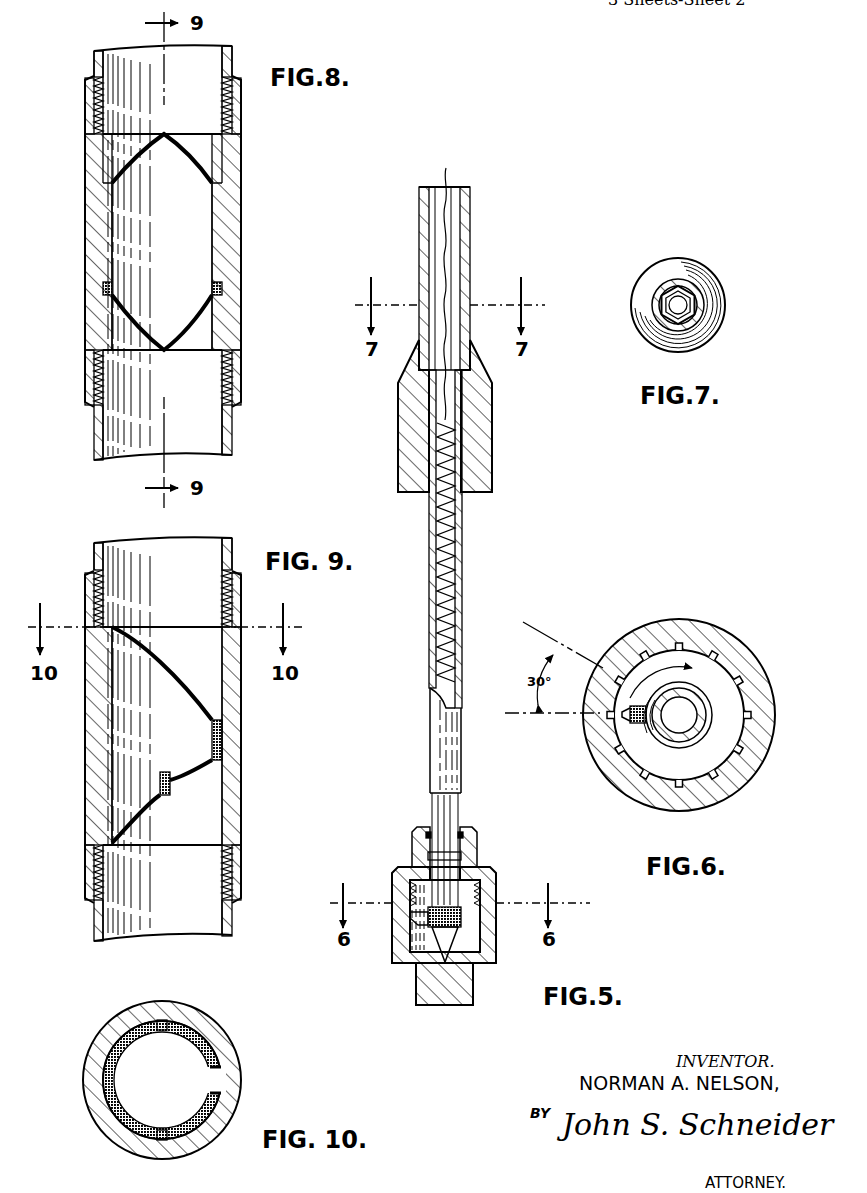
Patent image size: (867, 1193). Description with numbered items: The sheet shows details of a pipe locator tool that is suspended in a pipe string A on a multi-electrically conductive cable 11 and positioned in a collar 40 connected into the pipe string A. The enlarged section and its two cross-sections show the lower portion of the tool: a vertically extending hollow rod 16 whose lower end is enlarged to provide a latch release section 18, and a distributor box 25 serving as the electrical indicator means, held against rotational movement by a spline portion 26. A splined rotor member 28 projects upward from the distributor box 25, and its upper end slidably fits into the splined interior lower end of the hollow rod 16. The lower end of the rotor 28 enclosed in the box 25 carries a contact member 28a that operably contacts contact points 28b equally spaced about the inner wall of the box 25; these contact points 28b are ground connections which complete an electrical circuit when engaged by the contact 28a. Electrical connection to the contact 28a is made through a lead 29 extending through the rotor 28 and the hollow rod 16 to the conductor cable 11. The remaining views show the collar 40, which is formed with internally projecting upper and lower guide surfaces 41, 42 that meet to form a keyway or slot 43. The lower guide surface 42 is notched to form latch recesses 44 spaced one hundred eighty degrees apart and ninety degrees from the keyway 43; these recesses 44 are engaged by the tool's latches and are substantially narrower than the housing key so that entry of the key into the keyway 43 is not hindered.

In FIG. 8, the pipe string A is at (100, 431).
In FIG. 9, the pipe string A is at (97, 553).
In FIG. 8, the collar 40 is at (100, 215).
In FIG. 9, the collar 40 is at (102, 750).
In FIG. 10, the collar 40 is at (100, 1057).
In FIG. 8, the upper guide surface 41 is at (197, 158).
In FIG. 9, the upper guide surface 41 is at (175, 680).
In FIG. 10, the upper guide surface 41 is at (138, 1027).
In FIG. 8, the lower guide surface 42 is at (197, 335).
In FIG. 9, the lower guide surface 42 is at (200, 770).
In FIG. 9, the keyway 43 is at (222, 738).
In FIG. 10, the keyway 43 is at (215, 1080).
In FIG. 8, the latch recesses 44 is at (103, 288).
In FIG. 9, the latch recesses 44 is at (162, 780).
In FIG. 10, the latch recesses 44 is at (178, 1022).
In FIG. 5, the multi-electrically conductive cable 11 is at (448, 213).
In FIG. 5, the hollow rod 16 is at (466, 254).
In FIG. 7, the hollow rod 16 is at (673, 282).
In FIG. 5, the latch release section 18 is at (492, 422).
In FIG. 7, the latch release section 18 is at (725, 301).
In FIG. 5, the distributor box 25 is at (492, 869).
In FIG. 6, the distributor box 25 is at (734, 650).
In FIG. 5, the spline portion 26 is at (452, 989).
In FIG. 5, the splined rotor member 28 is at (446, 768).
In FIG. 6, the splined rotor member 28 is at (698, 724).
In FIG. 7, the splined rotor member 28 is at (666, 313).
In FIG. 5, the contact member 28a is at (408, 954).
In FIG. 6, the contact member 28a is at (627, 719).
In FIG. 6, the contact points 28b is at (677, 653).
In FIG. 5, the lead 29 is at (451, 553).
In FIG. 6, the lead 29 is at (684, 730).